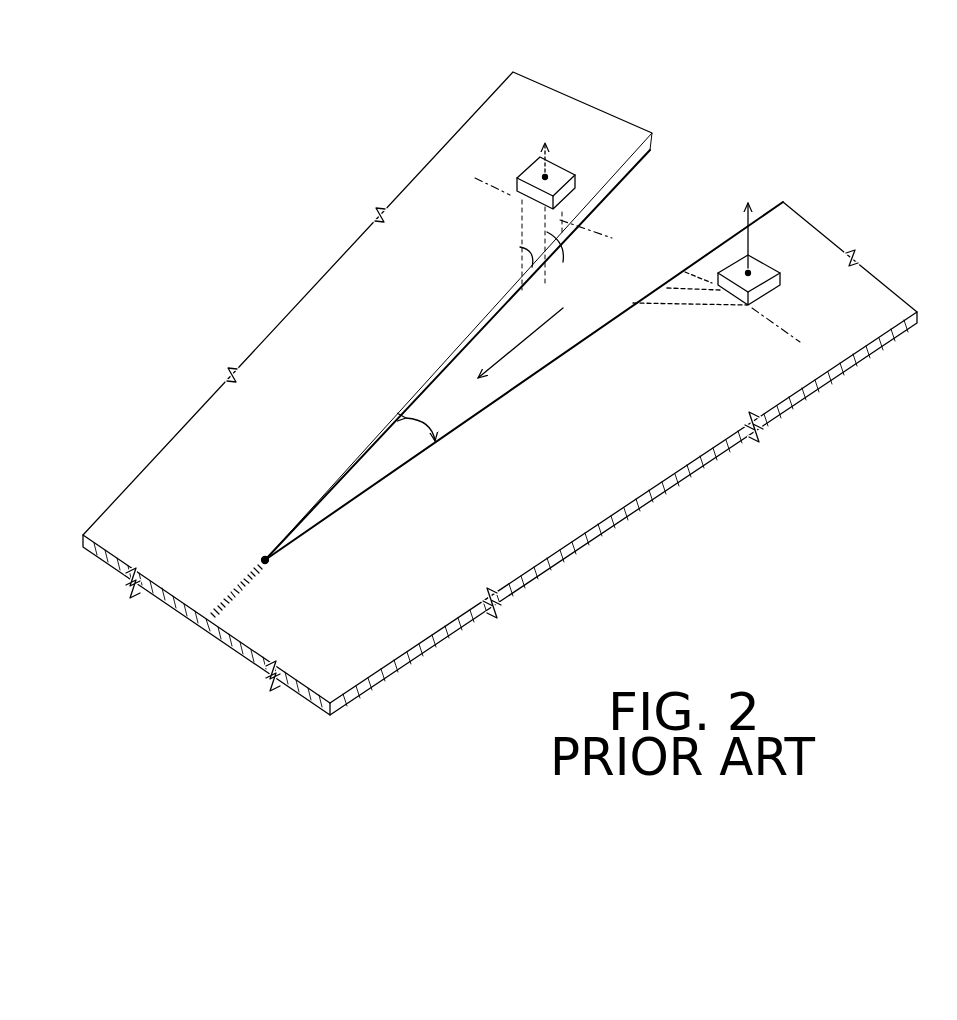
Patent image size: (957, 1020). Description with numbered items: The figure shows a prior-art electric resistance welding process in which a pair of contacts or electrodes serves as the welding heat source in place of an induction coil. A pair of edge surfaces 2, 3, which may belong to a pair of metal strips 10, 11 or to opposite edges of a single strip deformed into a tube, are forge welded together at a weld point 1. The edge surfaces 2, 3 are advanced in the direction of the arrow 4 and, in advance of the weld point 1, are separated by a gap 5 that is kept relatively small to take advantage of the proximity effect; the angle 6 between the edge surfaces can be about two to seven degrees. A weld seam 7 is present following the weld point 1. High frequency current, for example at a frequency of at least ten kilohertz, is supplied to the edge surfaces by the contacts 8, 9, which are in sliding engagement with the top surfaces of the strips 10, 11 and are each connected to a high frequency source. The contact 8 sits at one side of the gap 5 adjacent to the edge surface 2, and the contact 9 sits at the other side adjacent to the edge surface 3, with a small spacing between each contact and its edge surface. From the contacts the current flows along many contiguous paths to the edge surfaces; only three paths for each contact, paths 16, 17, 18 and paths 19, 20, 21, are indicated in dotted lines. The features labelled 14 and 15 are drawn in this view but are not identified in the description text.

The weld point 1 is at (272, 560).
The edge surface 2 is at (655, 136).
The edge surface 3 is at (559, 358).
The arrow 4 is at (502, 351).
The gap 5 is at (509, 357).
The angle 6 is at (434, 441).
The weld seam 7 is at (240, 592).
The contact 8 is at (530, 174).
The contact 9 is at (768, 268).
The metal strip 10 is at (371, 344).
The metal strip 11 is at (581, 485).
The axis line 14 is at (581, 226).
The edge point 15 is at (683, 267).
The current path 16 is at (577, 250).
The current path 17 is at (551, 270).
The current path 18 is at (536, 304).
The current path 19 is at (684, 268).
The current path 20 is at (667, 288).
The current path 21 is at (634, 303).